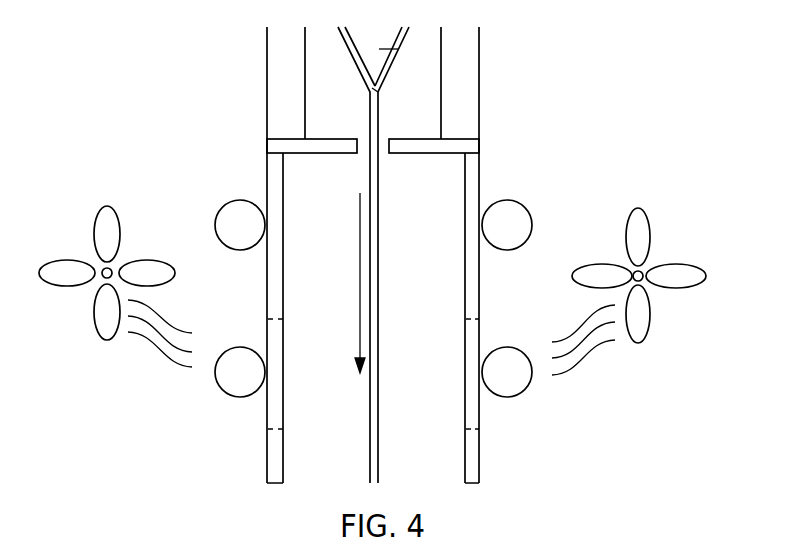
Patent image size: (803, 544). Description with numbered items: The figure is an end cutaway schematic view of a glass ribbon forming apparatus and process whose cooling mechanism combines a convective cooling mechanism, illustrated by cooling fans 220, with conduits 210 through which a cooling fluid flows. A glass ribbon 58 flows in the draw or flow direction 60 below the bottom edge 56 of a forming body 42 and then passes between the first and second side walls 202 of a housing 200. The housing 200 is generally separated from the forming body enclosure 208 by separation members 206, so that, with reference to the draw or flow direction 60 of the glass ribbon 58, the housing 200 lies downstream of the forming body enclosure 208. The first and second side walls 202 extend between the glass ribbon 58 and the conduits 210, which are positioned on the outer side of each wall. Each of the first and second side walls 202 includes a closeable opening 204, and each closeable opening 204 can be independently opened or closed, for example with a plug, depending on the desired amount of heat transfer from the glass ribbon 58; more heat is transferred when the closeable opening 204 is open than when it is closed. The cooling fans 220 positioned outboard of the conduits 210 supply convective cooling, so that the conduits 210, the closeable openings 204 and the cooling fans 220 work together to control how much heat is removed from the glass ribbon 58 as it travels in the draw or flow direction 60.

The forming body 42 is at (398, 49).
The bottom edge 56 is at (378, 90).
The glass ribbon 58 is at (378, 255).
The draw or flow direction 60 is at (360, 277).
The housing 200 is at (496, 187).
The first and second side walls 202 is at (267, 288).
The closeable opening 204 is at (267, 410).
The separation members 206 is at (267, 148).
The forming body enclosure 208 is at (496, 108).
The conduits 210 is at (215, 225).
The cooling fans 220 is at (95, 232).